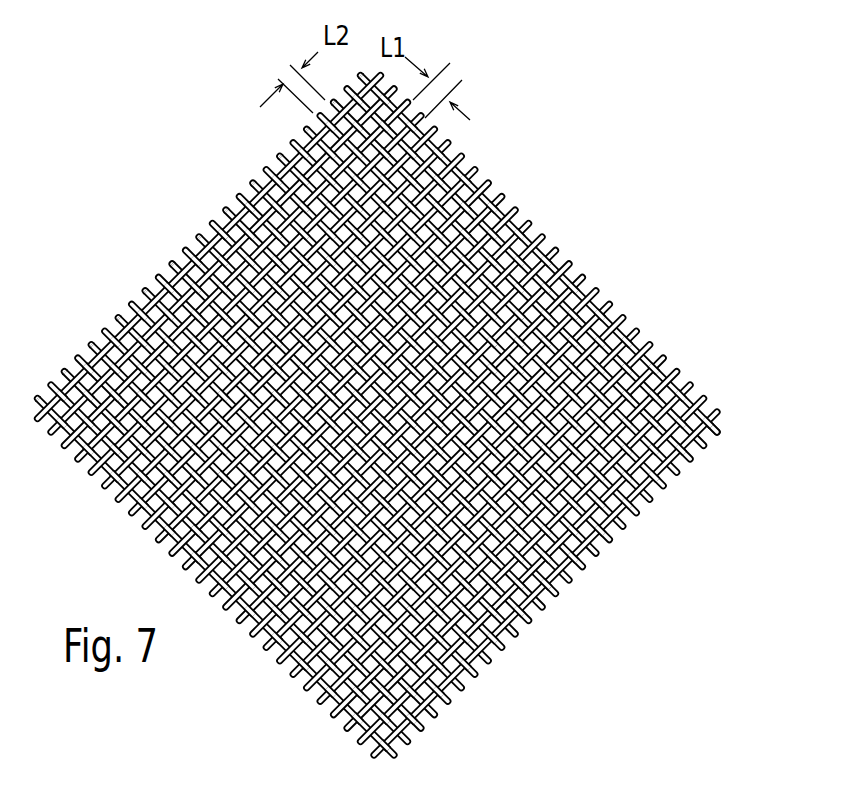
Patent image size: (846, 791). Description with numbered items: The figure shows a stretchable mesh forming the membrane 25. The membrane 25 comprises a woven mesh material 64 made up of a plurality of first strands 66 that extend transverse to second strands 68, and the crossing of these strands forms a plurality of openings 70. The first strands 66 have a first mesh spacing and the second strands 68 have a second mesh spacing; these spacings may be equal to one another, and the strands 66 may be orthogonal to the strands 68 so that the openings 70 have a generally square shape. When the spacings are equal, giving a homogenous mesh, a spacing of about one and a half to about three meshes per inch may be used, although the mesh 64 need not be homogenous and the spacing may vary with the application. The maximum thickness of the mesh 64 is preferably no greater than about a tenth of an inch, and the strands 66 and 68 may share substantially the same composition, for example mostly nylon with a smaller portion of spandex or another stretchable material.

The membrane 25 is at (435, 416).
The woven mesh material 64 is at (619, 319).
The first strands 66 is at (717, 411).
The second strands 68 is at (717, 435).
The openings 70 is at (712, 437).